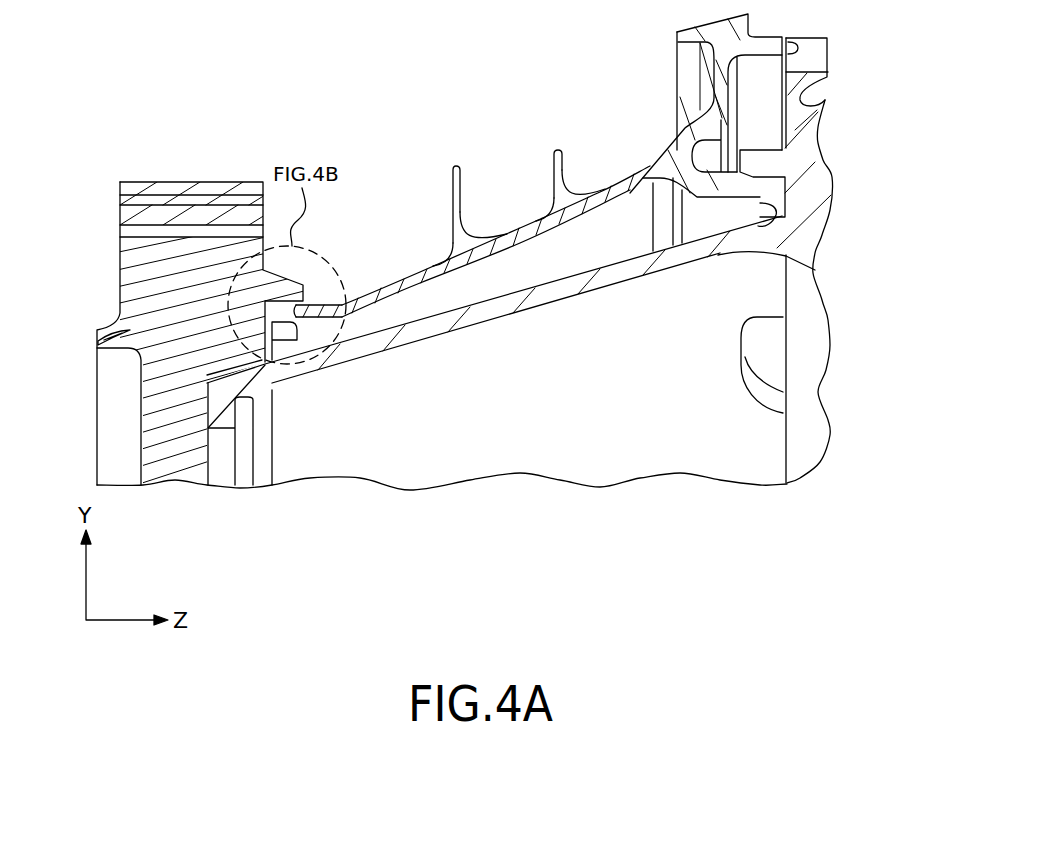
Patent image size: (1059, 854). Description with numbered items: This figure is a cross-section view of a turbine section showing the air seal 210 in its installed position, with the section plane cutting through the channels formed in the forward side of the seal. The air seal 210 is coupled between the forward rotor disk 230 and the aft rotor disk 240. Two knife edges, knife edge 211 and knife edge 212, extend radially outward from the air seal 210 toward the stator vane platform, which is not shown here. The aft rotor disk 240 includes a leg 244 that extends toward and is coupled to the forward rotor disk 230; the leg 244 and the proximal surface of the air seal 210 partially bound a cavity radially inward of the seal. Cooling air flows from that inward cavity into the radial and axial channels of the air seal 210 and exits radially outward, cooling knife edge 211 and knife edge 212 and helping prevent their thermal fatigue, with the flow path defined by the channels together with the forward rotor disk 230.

The air seal 210 is at (668, 150).
The knife edge 211 is at (450, 203).
The knife edge 212 is at (553, 178).
The forward rotor disk 230 is at (100, 336).
The aft rotor disk 240 is at (824, 160).
The leg 244 is at (502, 308).